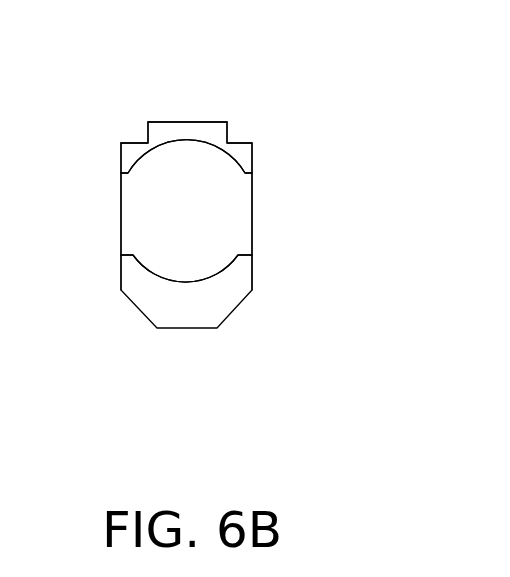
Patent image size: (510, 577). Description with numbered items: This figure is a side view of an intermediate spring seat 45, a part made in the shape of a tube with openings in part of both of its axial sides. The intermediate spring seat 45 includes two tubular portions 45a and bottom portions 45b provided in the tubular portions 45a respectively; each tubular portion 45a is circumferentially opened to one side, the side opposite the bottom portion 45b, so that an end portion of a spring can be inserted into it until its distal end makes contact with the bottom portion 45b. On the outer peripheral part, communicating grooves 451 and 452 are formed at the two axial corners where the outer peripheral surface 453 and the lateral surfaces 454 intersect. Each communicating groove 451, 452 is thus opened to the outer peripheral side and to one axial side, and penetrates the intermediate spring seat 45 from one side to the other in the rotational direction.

The intermediate spring seat 45 is at (260, 86).
The communicating groove 451 is at (148, 134).
The communicating groove 452 is at (228, 130).
The outer peripheral surface 453 is at (192, 122).
The lateral surface 454 is at (121, 211).
The tubular portion 45a is at (247, 155).
The bottom portion 45b is at (190, 223).